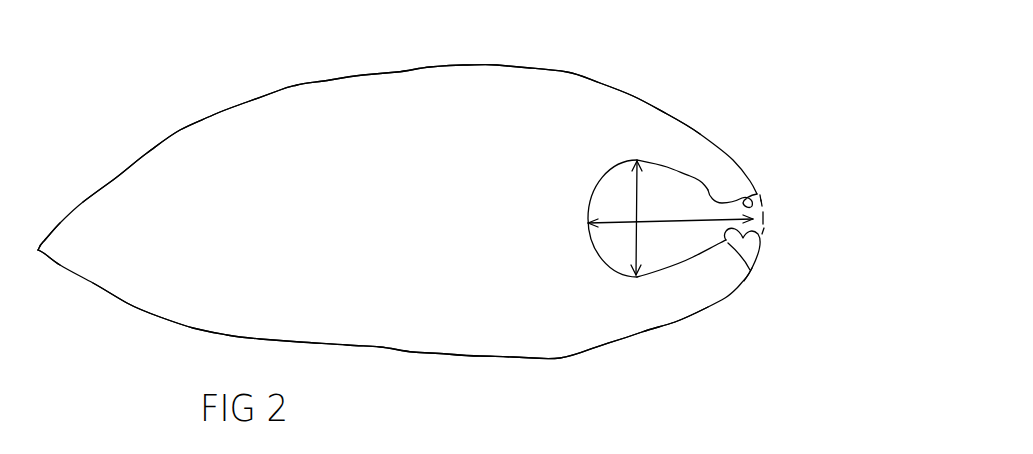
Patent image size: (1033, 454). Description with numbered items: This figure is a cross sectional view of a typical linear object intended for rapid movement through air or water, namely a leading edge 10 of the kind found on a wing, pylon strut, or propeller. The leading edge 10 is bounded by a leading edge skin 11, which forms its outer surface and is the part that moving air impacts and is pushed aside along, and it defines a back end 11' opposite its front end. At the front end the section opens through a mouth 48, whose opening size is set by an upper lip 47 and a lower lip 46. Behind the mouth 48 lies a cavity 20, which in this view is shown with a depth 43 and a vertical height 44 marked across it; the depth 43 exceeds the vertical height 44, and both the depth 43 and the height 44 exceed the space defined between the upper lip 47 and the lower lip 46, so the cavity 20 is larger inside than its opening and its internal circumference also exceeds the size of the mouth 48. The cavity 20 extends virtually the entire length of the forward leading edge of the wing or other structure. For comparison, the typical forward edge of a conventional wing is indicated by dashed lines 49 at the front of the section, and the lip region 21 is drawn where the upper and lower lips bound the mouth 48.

The leading edge 10 is at (413, 362).
The leading edge skin 11 is at (395, 226).
The back end 11' is at (46, 291).
The cavity 20 is at (659, 202).
The lip of cavity opening 21 is at (755, 196).
The depth 43 is at (613, 222).
The vertical height 44 is at (637, 273).
The lower lip 46 is at (750, 270).
The upper lip 47 is at (758, 195).
The mouth 48 is at (760, 203).
The forward edge of a wing 49 is at (767, 215).